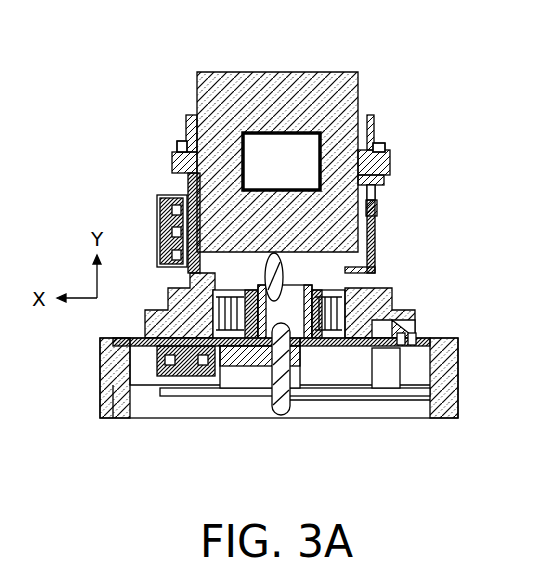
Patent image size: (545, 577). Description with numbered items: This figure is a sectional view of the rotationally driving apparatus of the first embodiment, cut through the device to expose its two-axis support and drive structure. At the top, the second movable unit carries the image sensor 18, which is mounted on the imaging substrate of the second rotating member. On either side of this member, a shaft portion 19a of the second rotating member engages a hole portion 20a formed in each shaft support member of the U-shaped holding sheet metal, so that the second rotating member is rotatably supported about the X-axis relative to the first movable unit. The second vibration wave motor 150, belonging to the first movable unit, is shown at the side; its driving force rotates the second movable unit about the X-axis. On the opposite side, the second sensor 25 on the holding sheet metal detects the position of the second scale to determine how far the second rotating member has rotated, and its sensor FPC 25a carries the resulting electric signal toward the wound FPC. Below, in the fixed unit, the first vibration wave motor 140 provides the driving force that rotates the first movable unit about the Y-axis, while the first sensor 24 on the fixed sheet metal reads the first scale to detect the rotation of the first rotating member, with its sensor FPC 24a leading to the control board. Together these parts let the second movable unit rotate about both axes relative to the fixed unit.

The image sensor 18 is at (282, 157).
The shaft portion 19a is at (182, 146).
The hole portion 20a is at (177, 140).
The second vibration wave motor 150 is at (147, 217).
The sensor FPC 25a is at (377, 192).
The second sensor 25 is at (378, 207).
The first sensor 24 is at (409, 338).
The sensor FPC 24a is at (409, 340).
The first vibration wave motor 140 is at (153, 377).